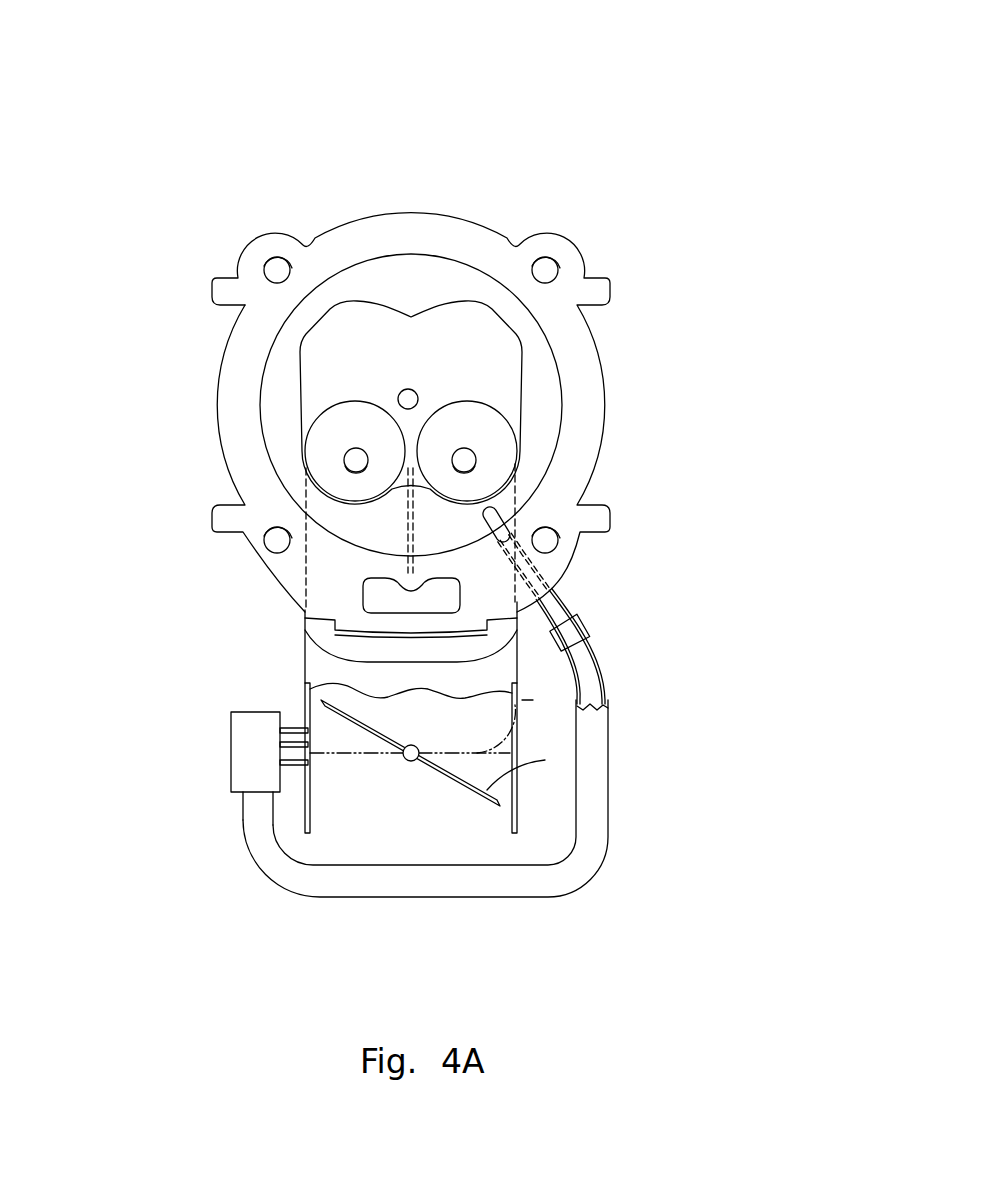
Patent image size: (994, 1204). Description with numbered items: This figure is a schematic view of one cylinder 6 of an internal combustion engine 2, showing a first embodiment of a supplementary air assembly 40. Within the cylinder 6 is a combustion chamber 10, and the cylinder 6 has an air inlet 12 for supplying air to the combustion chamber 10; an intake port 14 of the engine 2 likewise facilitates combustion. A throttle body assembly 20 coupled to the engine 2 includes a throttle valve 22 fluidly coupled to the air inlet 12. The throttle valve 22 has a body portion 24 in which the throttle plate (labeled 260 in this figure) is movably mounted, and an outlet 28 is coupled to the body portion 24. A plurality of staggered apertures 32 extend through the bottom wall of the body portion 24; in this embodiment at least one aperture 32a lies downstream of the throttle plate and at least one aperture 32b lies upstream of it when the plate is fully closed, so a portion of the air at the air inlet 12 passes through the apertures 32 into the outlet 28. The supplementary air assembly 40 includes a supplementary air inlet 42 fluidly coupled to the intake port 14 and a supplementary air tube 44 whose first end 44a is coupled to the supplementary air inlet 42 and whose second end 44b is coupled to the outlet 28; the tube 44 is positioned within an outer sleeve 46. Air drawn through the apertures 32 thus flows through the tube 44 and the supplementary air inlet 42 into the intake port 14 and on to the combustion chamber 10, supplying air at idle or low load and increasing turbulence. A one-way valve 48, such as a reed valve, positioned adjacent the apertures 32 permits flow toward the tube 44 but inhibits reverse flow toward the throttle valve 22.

The internal combustion engine 2 is at (532, 128).
The cylinder 6 is at (567, 408).
The combustion chamber 10 is at (346, 457).
The air inlet 12 is at (298, 611).
The intake port 14 is at (360, 413).
The throttle body assembly 20 is at (350, 828).
The throttle valve 22 is at (427, 796).
The body portion 24 is at (512, 817).
The outlet 28 is at (243, 763).
The apertures 32 is at (298, 722).
The aperture 32a is at (314, 743).
The aperture 32b is at (313, 766).
The supplementary air assembly 40 is at (620, 780).
The supplementary air inlet 42 is at (551, 602).
The supplementary air tube 44 is at (590, 667).
The first end 44a is at (580, 648).
The second end 44b is at (258, 813).
The outer sleeve 46 is at (610, 697).
The one-way valve 48 is at (298, 762).
The float lever 260 is at (382, 732).